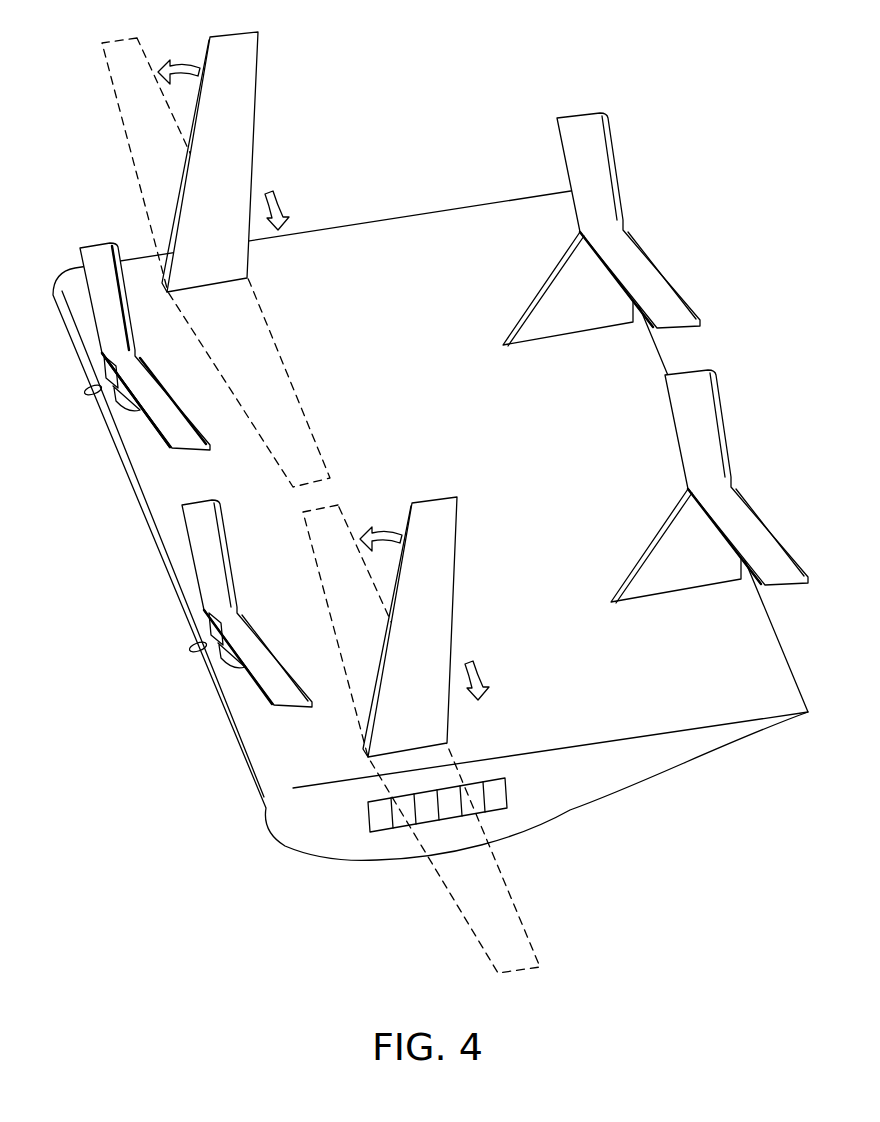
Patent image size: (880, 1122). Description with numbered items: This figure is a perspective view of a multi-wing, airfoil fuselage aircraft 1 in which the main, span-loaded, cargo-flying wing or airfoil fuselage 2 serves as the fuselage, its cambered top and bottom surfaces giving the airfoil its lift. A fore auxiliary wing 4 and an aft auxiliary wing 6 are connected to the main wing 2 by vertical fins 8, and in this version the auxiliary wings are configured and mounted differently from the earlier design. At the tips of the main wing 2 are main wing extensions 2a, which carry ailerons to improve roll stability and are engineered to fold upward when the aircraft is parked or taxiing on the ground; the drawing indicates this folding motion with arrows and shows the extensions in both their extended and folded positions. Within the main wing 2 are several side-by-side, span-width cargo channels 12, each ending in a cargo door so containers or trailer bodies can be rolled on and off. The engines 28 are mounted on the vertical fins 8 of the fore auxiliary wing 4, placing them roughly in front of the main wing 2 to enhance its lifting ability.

The multi-wing, airfoil fuselage aircraft 1 is at (431, 502).
The main wing or airfoil fuselage 2 is at (690, 757).
The main wing extensions 2a is at (245, 142).
The fore auxiliary wing 4 is at (219, 603).
The aft auxiliary wing 6 is at (708, 442).
The vertical fins 8 is at (707, 575).
The cargo channels 12 is at (498, 813).
The engines 28 is at (193, 647).